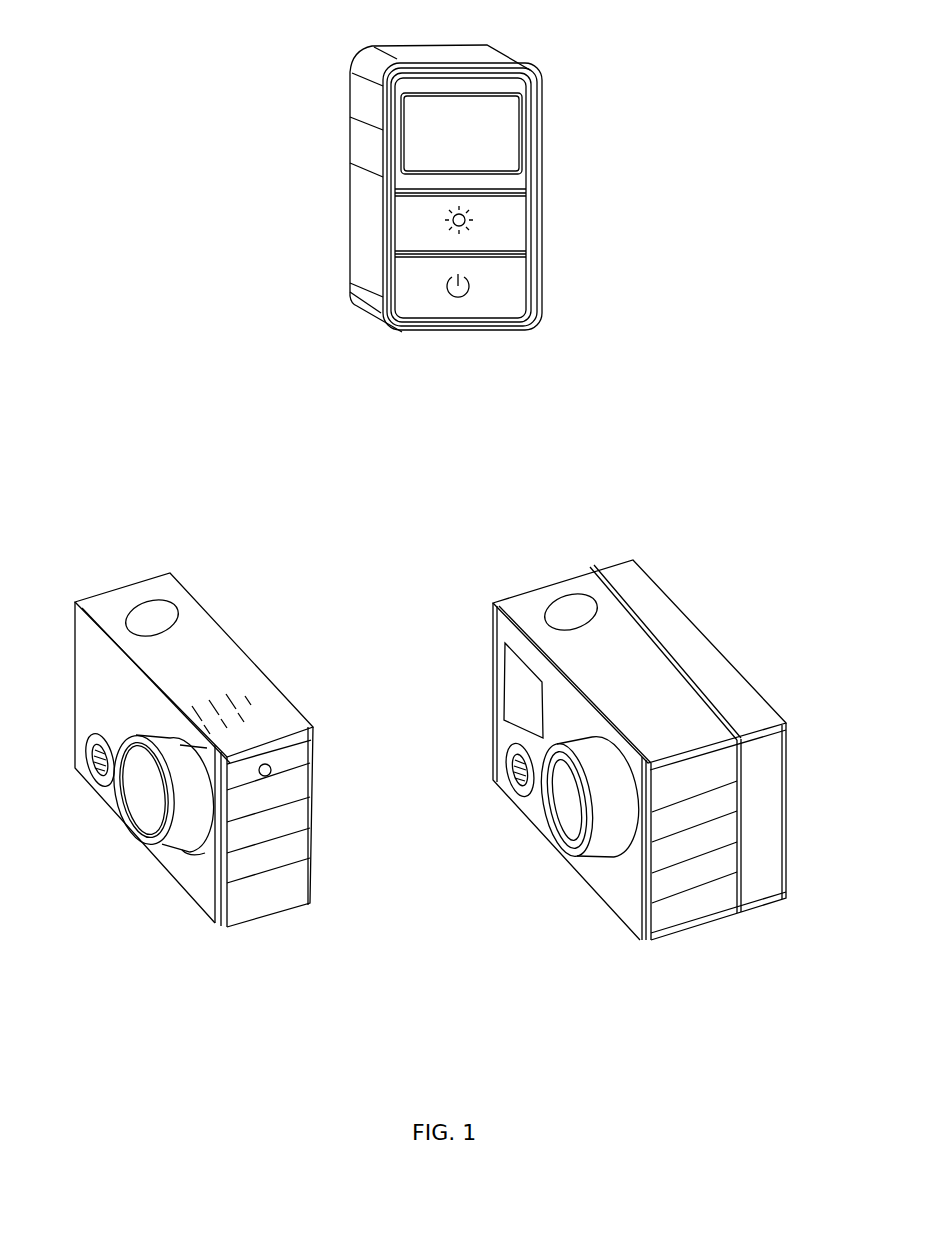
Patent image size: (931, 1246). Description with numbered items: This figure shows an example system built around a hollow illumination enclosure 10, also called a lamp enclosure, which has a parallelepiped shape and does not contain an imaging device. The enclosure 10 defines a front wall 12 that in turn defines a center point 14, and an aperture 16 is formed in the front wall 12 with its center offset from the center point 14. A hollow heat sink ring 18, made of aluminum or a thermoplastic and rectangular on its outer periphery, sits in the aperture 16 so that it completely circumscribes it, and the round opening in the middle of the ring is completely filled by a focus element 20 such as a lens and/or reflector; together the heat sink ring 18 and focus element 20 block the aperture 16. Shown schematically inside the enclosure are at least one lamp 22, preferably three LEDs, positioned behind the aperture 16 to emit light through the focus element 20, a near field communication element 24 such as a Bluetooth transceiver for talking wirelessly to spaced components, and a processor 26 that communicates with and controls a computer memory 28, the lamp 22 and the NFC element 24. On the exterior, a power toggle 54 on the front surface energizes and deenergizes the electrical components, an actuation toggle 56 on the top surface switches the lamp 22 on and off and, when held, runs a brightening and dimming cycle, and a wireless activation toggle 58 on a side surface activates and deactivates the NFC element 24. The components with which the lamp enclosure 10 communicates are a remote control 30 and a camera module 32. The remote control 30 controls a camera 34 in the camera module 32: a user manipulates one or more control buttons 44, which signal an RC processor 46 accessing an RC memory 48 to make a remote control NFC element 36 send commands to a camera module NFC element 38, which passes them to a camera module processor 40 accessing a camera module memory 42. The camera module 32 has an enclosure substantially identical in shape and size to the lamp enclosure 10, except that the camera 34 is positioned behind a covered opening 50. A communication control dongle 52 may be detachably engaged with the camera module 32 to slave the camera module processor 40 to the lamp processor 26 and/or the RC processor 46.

The illumination enclosure 10 is at (118, 579).
The front wall 12 is at (90, 655).
The center point 14 is at (143, 803).
The aperture 16 is at (186, 853).
The heat sink ring 18 is at (150, 727).
The focus element 20 is at (182, 842).
The lamp 22 is at (300, 890).
The near field communication element 24 is at (300, 855).
The processor 26 is at (300, 825).
The computer memory 28 is at (300, 794).
The remote control 30 is at (566, 158).
The camera module 32 is at (548, 562).
The camera 34 is at (727, 903).
The remote control NFC element 36 is at (350, 185).
The camera module NFC element 38 is at (727, 866).
The camera module processor 40 is at (727, 834).
The camera module memory 42 is at (727, 806).
The control buttons 44 is at (514, 237).
The RC processor 46 is at (350, 133).
The RC memory 48 is at (350, 88).
The covered opening 50 is at (568, 812).
The communication control dongle 52 is at (718, 676).
The power toggle 54 is at (100, 787).
The actuation toggle 56 is at (168, 612).
The wireless activation toggle 58 is at (272, 769).